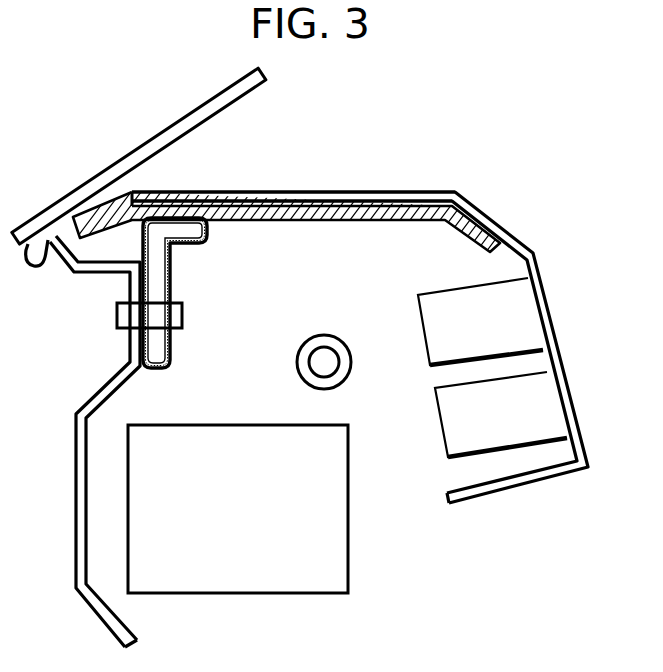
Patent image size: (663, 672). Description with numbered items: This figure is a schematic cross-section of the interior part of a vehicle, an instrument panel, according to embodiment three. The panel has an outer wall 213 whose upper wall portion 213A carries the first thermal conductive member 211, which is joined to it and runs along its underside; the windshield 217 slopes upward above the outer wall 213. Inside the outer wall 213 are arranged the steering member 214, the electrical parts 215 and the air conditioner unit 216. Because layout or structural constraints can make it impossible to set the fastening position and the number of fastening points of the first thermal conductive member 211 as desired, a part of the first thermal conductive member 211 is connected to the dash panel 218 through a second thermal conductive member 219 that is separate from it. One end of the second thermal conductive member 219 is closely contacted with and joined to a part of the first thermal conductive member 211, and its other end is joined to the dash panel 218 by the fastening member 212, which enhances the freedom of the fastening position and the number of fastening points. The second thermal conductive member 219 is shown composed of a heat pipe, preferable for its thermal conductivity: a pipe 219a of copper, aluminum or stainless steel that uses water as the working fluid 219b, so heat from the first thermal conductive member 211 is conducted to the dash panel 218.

The first thermal conductive member 211 is at (362, 222).
The fastening member 212 is at (117, 318).
The housing cover 213 is at (360, 315).
The top wall of cover 213A is at (323, 192).
The shaft 214 is at (343, 343).
The guide plates 215 is at (450, 353).
The unit body 216 is at (352, 550).
The inclined plate 217 is at (137, 148).
The dash panel 218 is at (80, 406).
The second thermal conductive member 219 is at (240, 293).
The pipe 219a is at (167, 352).
The working fluid 219b is at (160, 263).